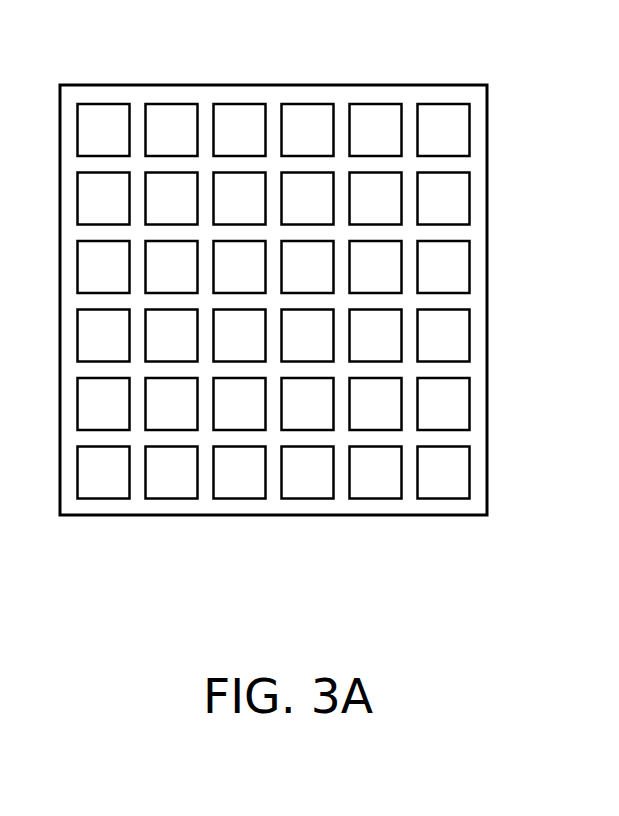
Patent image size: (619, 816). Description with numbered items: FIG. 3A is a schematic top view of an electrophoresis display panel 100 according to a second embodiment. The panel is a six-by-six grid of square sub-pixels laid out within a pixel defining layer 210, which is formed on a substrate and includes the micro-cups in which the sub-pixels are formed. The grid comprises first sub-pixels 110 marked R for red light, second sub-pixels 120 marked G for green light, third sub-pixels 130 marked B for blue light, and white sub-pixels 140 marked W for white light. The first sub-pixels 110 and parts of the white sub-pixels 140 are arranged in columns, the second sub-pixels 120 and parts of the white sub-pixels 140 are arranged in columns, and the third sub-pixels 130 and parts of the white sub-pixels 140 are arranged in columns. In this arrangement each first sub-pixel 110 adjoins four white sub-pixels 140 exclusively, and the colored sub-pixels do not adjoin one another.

The electrophoresis display panel 100 is at (329, 272).
The first sub-pixel 110 is at (98, 110).
The second sub-pixel 120 is at (237, 110).
The third sub-pixel 130 is at (374, 110).
The white sub-pixel 140 is at (170, 110).
The pixel defining layer 210 is at (482, 112).